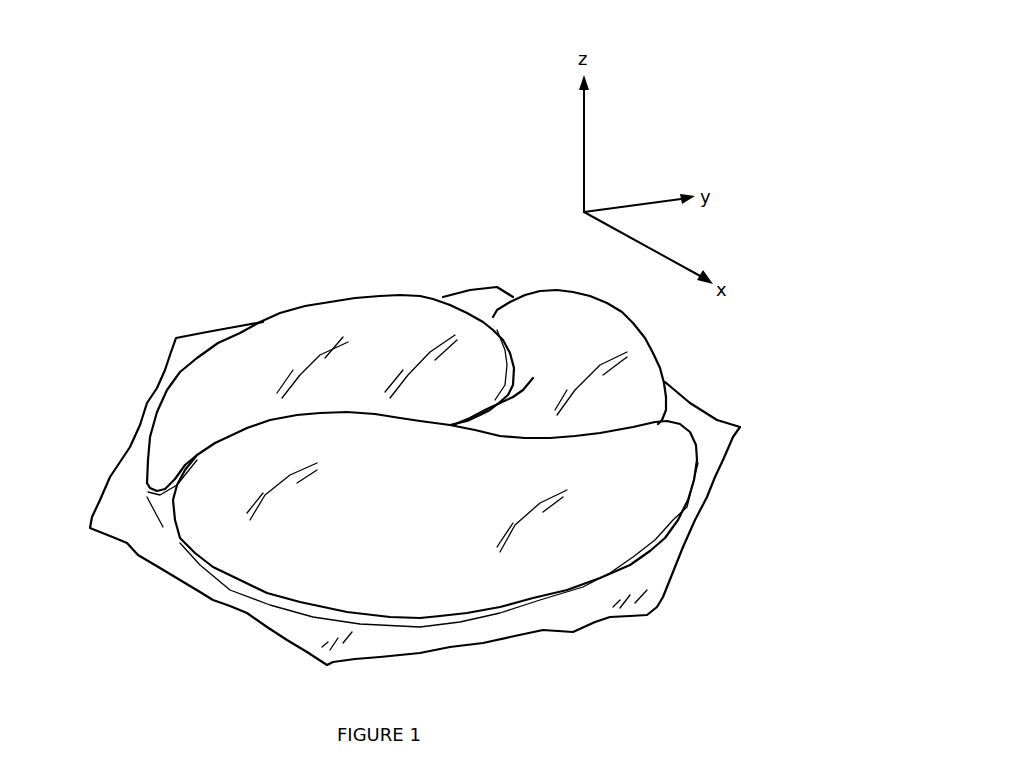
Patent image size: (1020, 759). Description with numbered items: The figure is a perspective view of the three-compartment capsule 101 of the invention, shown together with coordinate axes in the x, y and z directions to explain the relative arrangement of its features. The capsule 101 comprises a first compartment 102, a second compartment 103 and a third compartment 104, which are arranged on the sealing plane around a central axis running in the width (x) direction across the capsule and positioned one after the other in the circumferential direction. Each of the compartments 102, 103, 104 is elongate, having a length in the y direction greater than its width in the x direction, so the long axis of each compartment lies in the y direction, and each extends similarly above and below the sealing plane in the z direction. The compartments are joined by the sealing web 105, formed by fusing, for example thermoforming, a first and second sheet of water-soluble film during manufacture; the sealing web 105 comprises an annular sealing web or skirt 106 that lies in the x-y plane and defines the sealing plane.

The capsule 101 is at (306, 233).
The first compartment 102 is at (650, 540).
The second compartment 103 is at (655, 355).
The third compartment 104 is at (313, 307).
The sealing web 105 is at (610, 598).
The annular sealing web or skirt 106 is at (96, 528).